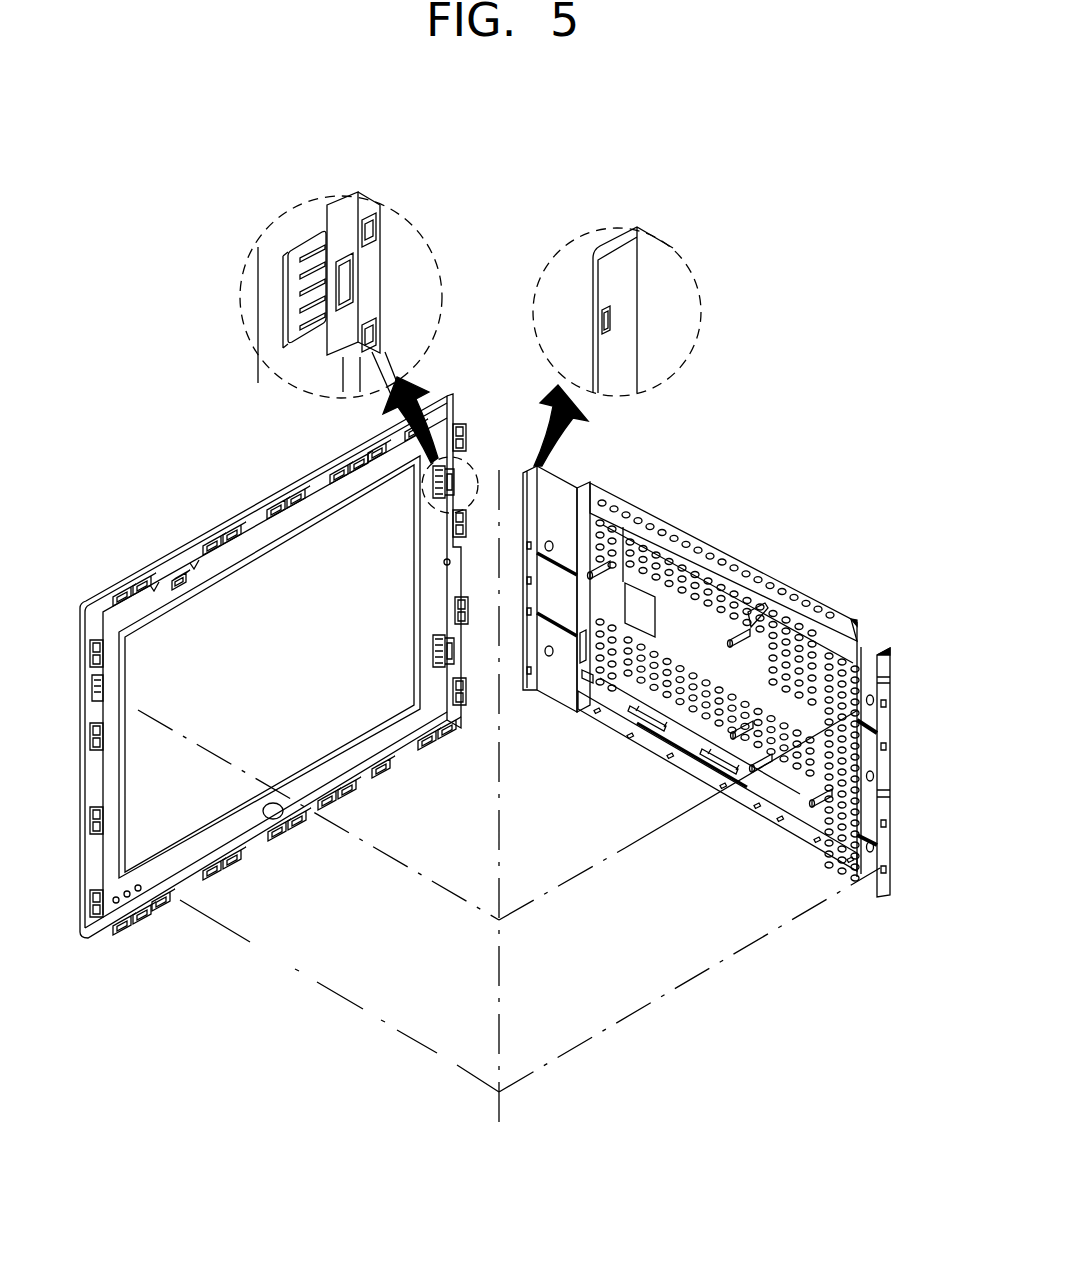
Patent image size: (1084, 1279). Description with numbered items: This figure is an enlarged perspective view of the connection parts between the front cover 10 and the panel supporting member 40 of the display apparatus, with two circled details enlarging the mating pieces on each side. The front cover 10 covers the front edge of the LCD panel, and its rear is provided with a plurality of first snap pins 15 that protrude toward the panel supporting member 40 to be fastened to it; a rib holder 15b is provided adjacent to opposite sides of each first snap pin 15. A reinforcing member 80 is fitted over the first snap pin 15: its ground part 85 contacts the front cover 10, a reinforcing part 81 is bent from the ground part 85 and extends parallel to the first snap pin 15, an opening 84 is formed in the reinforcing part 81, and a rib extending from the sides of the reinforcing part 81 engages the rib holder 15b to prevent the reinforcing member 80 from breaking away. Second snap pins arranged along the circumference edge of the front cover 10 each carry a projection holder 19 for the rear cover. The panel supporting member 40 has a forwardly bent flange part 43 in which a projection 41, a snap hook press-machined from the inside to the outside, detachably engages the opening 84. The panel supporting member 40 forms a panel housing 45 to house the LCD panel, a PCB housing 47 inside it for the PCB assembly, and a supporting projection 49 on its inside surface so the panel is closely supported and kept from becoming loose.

The front cover 10 is at (279, 666).
The first snap pin 15 is at (378, 297).
The rib holder 15b is at (364, 238).
The projection holder 19 is at (176, 582).
The panel supporting member 40 is at (750, 664).
The projection 41 is at (602, 326).
The flange part 43 is at (617, 248).
The panel housing 45 is at (568, 492).
The PCB housing 47 is at (668, 603).
The supporting projection 49 is at (893, 853).
The reinforcing member 80 is at (259, 432).
The reinforcing part 81 is at (345, 250).
The opening 84 is at (358, 297).
The ground part 85 is at (300, 288).